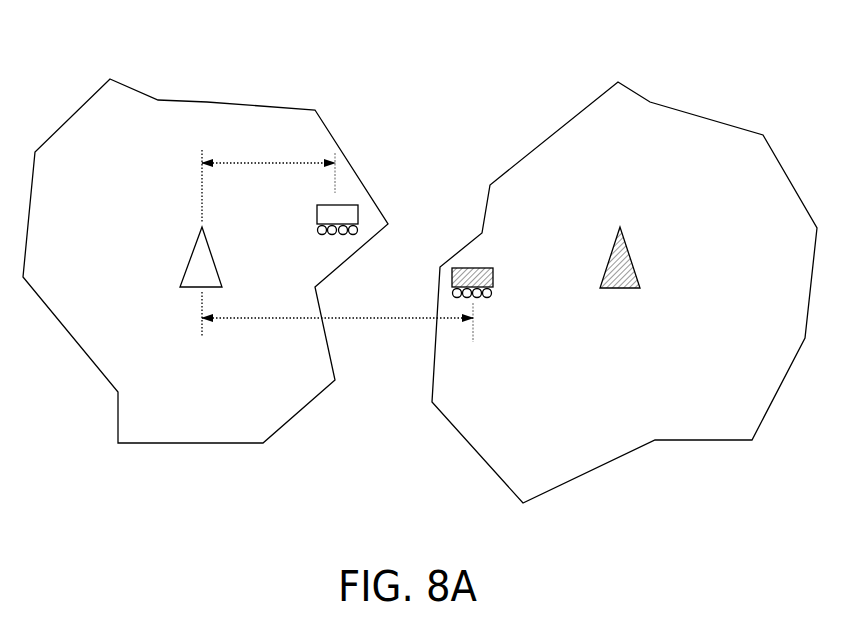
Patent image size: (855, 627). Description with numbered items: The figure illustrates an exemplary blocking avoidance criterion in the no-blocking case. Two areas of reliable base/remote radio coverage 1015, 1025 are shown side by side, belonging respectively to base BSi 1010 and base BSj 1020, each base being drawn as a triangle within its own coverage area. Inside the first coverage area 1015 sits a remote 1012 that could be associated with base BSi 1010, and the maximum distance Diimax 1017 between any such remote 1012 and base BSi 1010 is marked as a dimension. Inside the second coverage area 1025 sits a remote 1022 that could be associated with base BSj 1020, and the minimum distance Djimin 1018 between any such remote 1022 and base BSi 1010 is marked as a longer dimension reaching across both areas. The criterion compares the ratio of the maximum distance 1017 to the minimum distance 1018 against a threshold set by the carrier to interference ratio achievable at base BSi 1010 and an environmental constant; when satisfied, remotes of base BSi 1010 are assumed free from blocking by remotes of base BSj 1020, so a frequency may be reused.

The area of reliable base/remote radio coverage 1015 is at (62, 95).
The area of reliable base/remote radio coverage 1025 is at (742, 112).
The base BSi 1010 is at (160, 275).
The base BSj 1020 is at (688, 235).
The remote 1012 is at (366, 218).
The remote 1022 is at (538, 250).
The maximum distance Diimax 1017 is at (268, 149).
The minimum distance Djimin 1018 is at (337, 336).